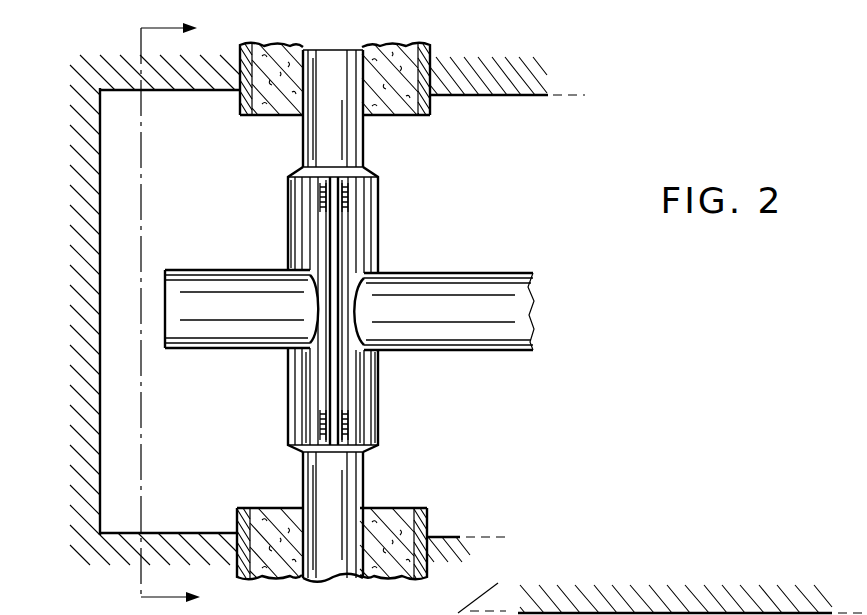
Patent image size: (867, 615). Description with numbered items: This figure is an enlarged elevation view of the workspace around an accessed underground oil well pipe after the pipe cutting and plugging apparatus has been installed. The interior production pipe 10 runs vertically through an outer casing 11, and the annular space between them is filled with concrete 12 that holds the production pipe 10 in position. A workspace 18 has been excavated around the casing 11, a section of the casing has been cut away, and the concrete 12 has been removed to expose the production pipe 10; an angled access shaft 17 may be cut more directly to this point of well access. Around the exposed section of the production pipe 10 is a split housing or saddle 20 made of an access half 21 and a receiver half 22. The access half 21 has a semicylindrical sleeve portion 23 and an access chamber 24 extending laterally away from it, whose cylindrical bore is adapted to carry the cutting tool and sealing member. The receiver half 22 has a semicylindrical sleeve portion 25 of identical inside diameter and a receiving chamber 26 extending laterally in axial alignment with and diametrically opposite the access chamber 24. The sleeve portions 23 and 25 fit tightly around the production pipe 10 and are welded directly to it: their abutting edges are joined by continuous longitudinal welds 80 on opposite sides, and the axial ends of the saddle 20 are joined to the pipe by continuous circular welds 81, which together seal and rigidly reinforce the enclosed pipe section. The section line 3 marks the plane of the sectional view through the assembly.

The section line 3- 3 is at (180, 312).
The production pipe 10 is at (298, 62).
The outer casing 11 is at (436, 66).
The concrete 12 is at (397, 47).
The angled access shaft 17 is at (458, 536).
The workspace 18 is at (162, 455).
The saddle 20 is at (378, 373).
The access half 21 is at (378, 198).
The receiver half 22 is at (289, 226).
The semicylindrical sleeve portion 23 is at (364, 402).
The access chamber 24 is at (413, 300).
The semicylindrical sleeve portion 25 is at (303, 383).
The receiving chamber 26 is at (212, 290).
The longitudinal welds 80 is at (340, 246).
The circular welds 81 is at (333, 170).